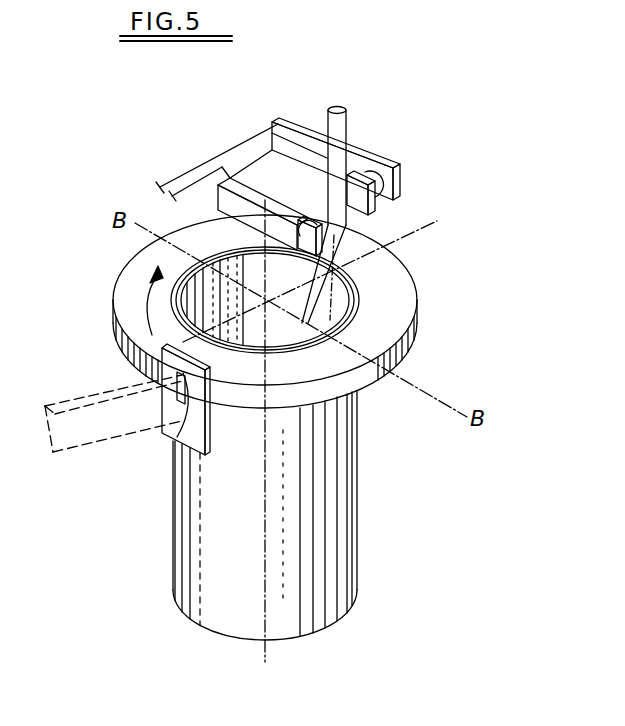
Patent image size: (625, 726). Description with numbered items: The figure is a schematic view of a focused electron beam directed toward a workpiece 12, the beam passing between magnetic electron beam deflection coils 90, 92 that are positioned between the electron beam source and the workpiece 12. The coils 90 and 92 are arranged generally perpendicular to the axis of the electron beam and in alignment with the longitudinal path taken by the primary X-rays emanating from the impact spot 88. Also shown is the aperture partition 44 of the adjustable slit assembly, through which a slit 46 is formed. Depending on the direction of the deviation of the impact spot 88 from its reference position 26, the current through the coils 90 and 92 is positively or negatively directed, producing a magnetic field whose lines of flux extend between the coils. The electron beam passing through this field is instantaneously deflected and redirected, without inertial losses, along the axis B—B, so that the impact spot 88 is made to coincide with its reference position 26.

The workpiece 12 is at (408, 277).
The reference position 26 is at (320, 322).
The aperture partition 44 is at (208, 448).
The slit 46 is at (177, 437).
The impact spot 88 is at (303, 322).
The electron beam deflection coil 90 is at (378, 168).
The electron beam deflection coil 92 is at (314, 197).